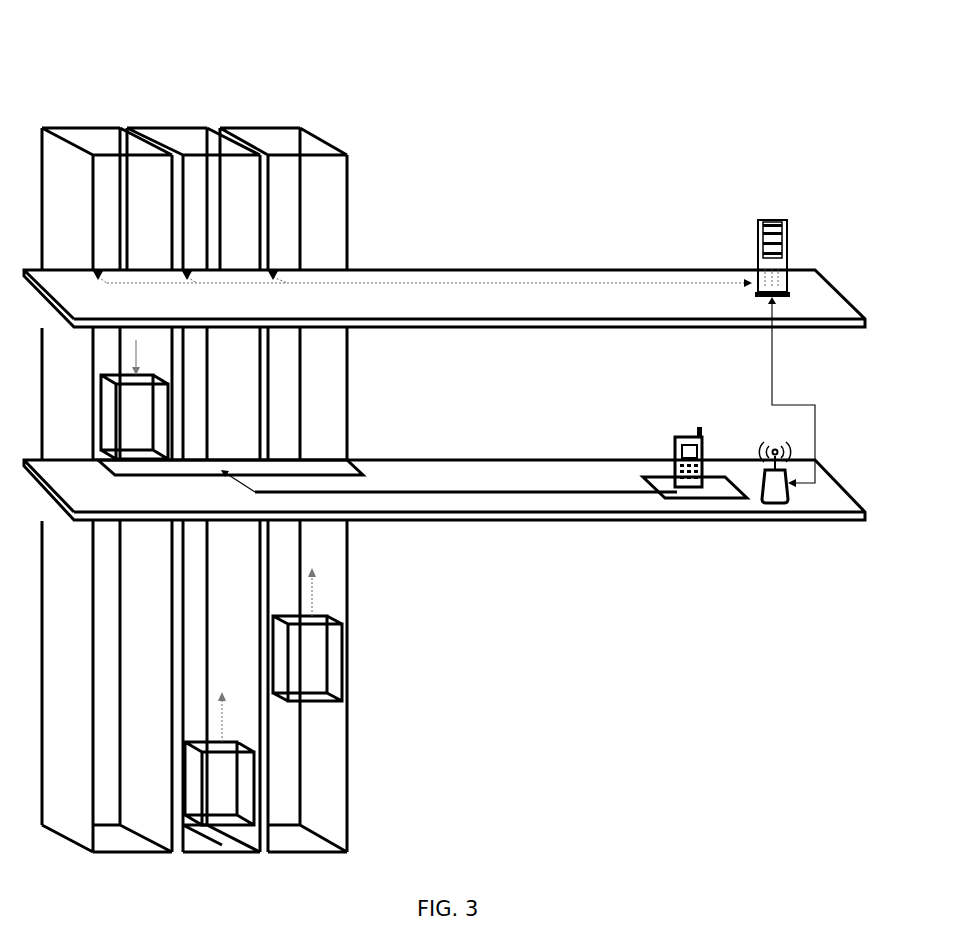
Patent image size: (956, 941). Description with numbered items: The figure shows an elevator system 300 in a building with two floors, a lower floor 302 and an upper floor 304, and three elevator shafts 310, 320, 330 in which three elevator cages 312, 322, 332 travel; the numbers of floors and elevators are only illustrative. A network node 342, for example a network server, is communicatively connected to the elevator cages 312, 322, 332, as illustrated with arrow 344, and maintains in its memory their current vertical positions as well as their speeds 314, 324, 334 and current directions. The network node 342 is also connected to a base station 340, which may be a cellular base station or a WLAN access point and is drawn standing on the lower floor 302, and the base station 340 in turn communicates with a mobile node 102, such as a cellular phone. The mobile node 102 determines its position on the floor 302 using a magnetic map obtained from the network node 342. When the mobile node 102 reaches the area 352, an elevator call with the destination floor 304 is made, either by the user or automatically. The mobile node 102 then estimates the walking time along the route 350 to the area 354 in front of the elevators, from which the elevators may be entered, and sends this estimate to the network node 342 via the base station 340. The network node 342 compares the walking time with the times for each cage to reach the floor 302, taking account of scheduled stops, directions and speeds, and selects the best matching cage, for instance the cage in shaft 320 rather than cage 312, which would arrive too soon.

The elevator system 300 is at (92, 38).
The elevator shaft 330 is at (88, 127).
The elevator shaft 320 is at (178, 127).
The elevator shaft 310 is at (271, 127).
The floor 304 is at (650, 328).
The floor 302 is at (634, 521).
The area in front of elevators 354 is at (348, 462).
The route 350 is at (468, 492).
The area 352 is at (700, 499).
The elevator cage 332 is at (146, 462).
The elevator cage 312 is at (346, 668).
The elevator cage 322 is at (205, 826).
The speed 334 is at (136, 340).
The speed 314 is at (313, 595).
The speed 324 is at (225, 707).
The arrow 344 is at (542, 284).
The network node 342 is at (770, 216).
The mobile node 102 is at (704, 450).
The base station 340 is at (775, 504).